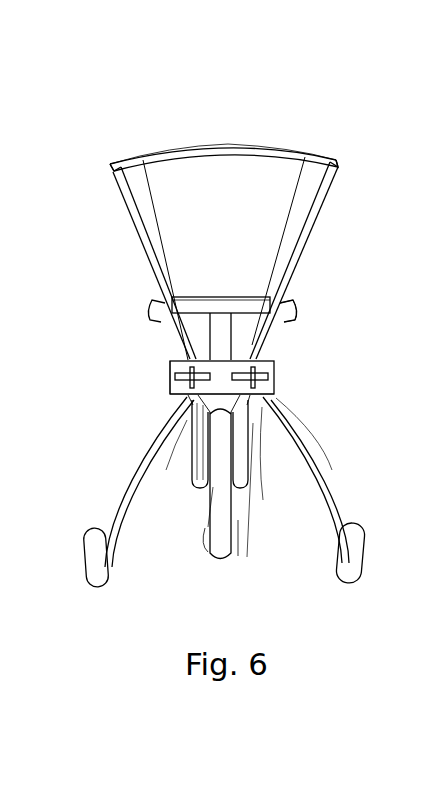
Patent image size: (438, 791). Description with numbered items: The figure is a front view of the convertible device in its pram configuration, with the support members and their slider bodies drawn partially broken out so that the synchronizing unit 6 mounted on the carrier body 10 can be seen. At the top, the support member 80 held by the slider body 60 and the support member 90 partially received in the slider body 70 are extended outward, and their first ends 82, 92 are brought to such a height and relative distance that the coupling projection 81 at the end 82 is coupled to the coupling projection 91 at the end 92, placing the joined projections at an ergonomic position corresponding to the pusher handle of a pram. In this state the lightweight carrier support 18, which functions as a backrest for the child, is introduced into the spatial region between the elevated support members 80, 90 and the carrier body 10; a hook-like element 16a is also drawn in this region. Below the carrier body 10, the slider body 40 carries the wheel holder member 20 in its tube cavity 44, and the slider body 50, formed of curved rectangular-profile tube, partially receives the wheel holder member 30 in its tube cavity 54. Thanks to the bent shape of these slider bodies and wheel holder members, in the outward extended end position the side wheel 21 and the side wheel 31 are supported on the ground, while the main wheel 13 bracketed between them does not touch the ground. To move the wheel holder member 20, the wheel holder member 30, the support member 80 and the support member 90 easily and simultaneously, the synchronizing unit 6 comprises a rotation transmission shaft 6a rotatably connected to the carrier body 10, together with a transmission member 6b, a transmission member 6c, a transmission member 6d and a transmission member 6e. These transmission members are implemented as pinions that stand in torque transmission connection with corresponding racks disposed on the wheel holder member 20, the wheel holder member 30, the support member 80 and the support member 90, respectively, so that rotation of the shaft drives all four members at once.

The carrier body 10 is at (221, 330).
The lightweight carrier support 18 is at (238, 178).
The support member 80 is at (145, 247).
The coupling projection 81 is at (131, 158).
The first end 82 is at (110, 177).
The support member 90 is at (306, 250).
The coupling projection 91 is at (320, 158).
The first end 92 is at (337, 168).
The hook 16a is at (296, 306).
The synchronizing unit 6 is at (280, 403).
The rotation transmission shaft 6a is at (275, 380).
The transmission member 6b is at (176, 368).
The transmission member 6c is at (262, 358).
The transmission member 6d is at (152, 322).
The transmission member 6e is at (258, 322).
The slider body 40 is at (174, 390).
The tube cavity 44 is at (176, 395).
The wheel holder member 20 is at (132, 473).
The side wheel 21 is at (93, 554).
The wheel holder member 30 is at (334, 488).
The side wheel 31 is at (367, 548).
The slider body 50 is at (332, 470).
The tube cavity 54 is at (242, 470).
The slider body 60 is at (189, 484).
The main wheel 13 is at (208, 530).
The slider body 70 is at (237, 556).